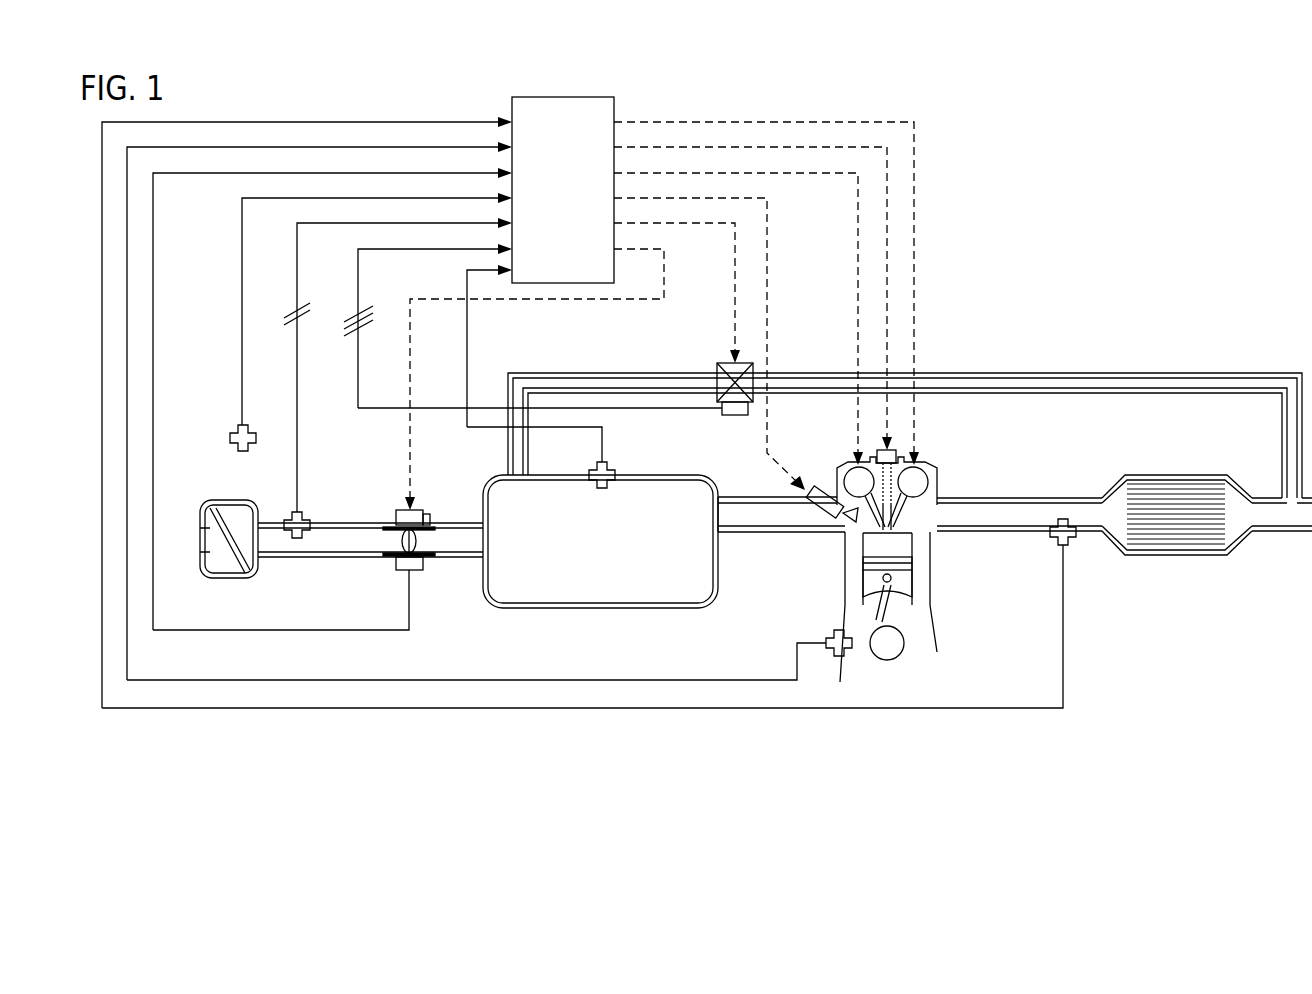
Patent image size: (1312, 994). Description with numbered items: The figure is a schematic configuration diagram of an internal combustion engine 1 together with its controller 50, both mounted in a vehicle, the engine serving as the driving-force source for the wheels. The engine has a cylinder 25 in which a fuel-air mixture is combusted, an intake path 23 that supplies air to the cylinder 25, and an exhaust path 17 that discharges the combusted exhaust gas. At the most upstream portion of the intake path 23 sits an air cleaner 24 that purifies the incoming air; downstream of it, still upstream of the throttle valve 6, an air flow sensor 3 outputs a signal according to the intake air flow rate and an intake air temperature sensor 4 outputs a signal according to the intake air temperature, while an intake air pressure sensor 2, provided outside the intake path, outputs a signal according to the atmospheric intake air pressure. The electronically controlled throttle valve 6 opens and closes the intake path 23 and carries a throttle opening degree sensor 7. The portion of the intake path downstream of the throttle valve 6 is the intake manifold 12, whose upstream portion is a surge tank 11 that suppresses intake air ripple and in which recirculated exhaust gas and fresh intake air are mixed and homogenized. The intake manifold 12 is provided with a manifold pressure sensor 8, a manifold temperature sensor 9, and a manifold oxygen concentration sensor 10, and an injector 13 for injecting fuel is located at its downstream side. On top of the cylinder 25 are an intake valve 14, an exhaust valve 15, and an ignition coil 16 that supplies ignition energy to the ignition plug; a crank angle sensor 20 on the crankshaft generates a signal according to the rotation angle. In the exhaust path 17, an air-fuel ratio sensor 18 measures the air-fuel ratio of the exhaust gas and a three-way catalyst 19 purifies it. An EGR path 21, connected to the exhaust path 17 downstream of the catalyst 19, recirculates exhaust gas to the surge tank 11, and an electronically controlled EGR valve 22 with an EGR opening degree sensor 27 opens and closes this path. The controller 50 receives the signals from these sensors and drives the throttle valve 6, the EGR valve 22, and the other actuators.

The internal combustion engine 1 is at (1007, 275).
The intake air pressure sensor 2 is at (237, 430).
The air flow sensor 3 is at (334, 495).
The intake air temperature sensor 4 is at (310, 520).
The throttle valve 6 is at (423, 513).
The throttle opening degree sensor 7 is at (425, 575).
The manifold pressure sensor 8 is at (589, 454).
The manifold temperature sensor 9 is at (589, 454).
The manifold oxygen concentration sensor 10 is at (655, 435).
The surge tank 11 is at (595, 602).
The intake manifold 12 is at (670, 605).
The injector 13 is at (820, 518).
The intake valve 14 is at (853, 478).
The exhaust valve 15 is at (920, 479).
The ignition coil 16 is at (893, 450).
The exhaust path 17 is at (1000, 503).
The air-fuel ratio sensor 18 is at (1070, 547).
The catalyst 19 is at (1155, 487).
The crank angle sensor 20 is at (845, 656).
The EGR path 21 is at (1000, 378).
The EGR valve 22 is at (717, 372).
The intake path 23 is at (330, 558).
The air cleaner 24 is at (245, 578).
The cylinder 25 is at (935, 552).
The EGR opening degree sensor 27 is at (735, 415).
The controller 50 is at (603, 113).